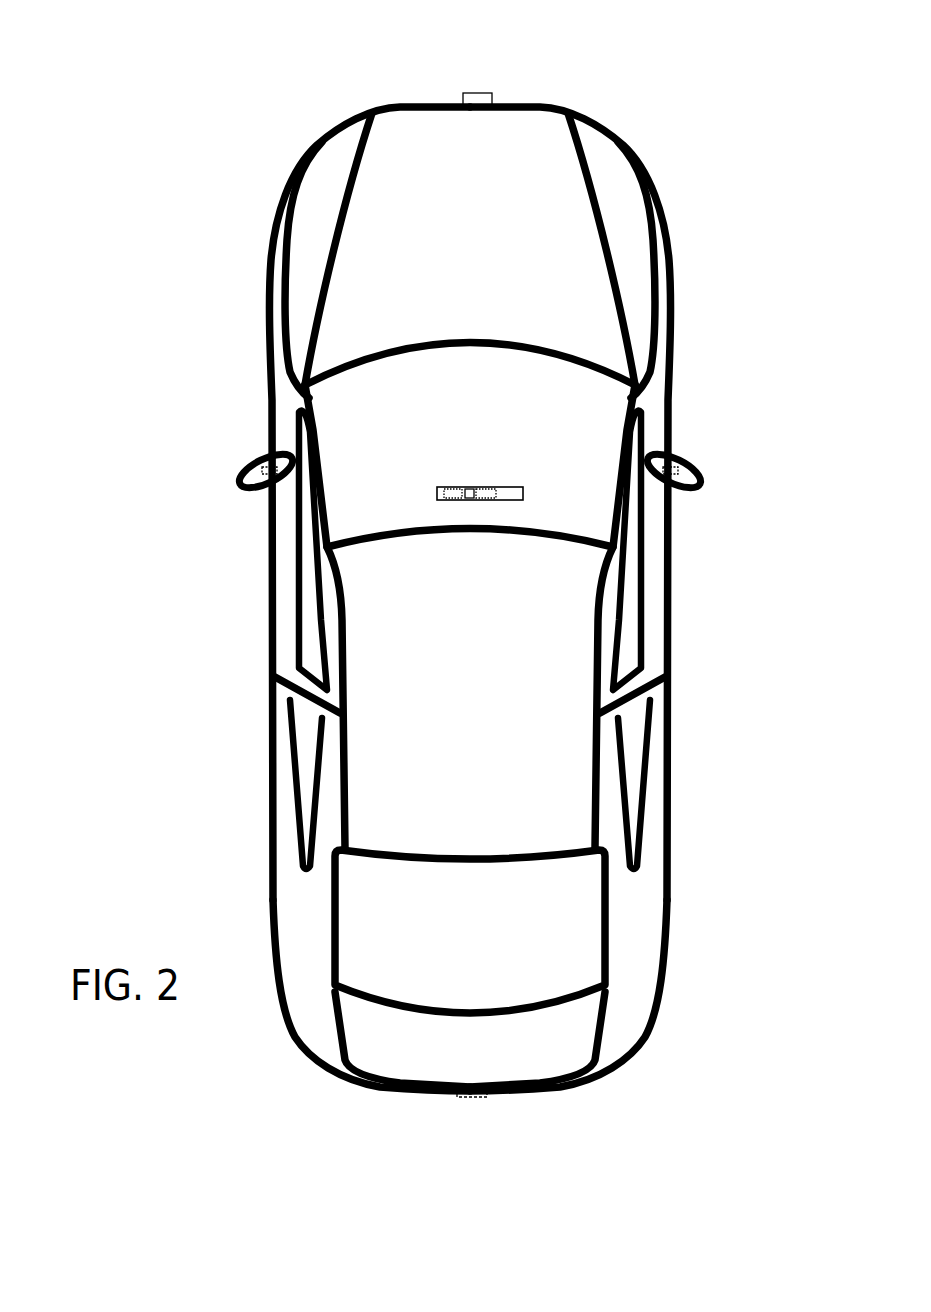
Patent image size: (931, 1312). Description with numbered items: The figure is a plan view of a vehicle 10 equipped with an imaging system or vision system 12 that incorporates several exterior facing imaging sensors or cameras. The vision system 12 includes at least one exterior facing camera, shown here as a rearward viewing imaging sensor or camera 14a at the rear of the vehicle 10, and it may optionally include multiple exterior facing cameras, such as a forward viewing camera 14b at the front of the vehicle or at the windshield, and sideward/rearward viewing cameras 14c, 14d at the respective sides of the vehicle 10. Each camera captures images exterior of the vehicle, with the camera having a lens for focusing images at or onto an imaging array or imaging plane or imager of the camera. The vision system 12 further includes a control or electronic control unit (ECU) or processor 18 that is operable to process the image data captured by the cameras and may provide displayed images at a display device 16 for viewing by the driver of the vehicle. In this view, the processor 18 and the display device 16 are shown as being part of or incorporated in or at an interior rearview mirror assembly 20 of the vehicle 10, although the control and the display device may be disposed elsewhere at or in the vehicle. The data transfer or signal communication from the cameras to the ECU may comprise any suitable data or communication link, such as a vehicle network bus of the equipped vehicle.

The vehicle 10 is at (216, 186).
The vision system 12 is at (421, 1118).
The rearward viewing camera 14a is at (477, 1097).
The forward viewing camera 14b is at (480, 93).
The sideward/rearward viewing camera 14c is at (256, 463).
The sideward/rearward viewing camera 14d is at (684, 463).
The display device 16 is at (453, 487).
The processor 18 is at (477, 487).
The interior rearview mirror assembly 20 is at (523, 488).